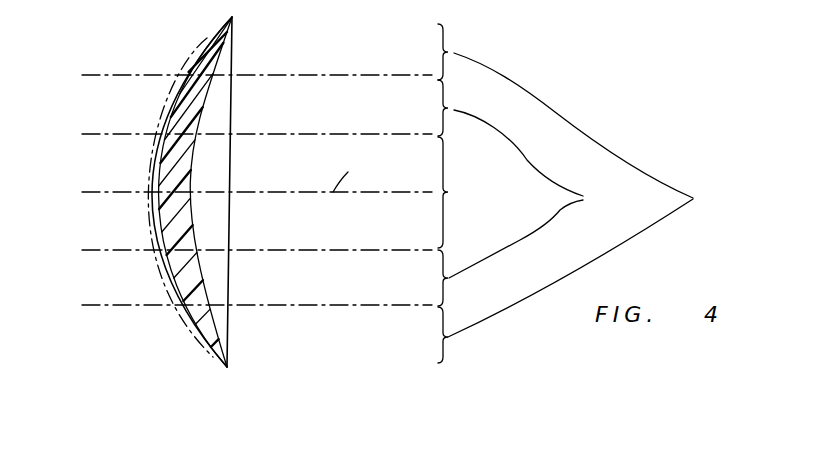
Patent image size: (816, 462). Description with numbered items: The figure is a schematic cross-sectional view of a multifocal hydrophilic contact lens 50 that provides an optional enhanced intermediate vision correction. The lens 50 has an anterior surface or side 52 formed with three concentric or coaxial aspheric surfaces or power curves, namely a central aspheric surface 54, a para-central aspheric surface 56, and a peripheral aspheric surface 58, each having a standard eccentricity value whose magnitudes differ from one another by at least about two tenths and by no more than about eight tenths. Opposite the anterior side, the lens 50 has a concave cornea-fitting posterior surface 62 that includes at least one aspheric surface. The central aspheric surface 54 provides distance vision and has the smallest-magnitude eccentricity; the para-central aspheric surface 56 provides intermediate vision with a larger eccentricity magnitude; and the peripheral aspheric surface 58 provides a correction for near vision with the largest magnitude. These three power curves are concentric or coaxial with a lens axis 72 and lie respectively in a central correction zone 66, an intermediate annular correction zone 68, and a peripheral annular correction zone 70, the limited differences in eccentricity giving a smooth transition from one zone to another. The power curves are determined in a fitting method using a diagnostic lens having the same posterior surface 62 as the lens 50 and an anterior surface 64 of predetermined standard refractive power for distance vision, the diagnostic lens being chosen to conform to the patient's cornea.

The multifocal hydrophilic contact lens 50 is at (183, 229).
The anterior surface 52 is at (190, 317).
The central aspheric surface 54 is at (153, 230).
The para-central aspheric surface 56 is at (177, 113).
The peripheral aspheric surface 58 is at (207, 56).
The posterior surface 62 is at (204, 279).
The anterior surface of diagnostic lens 64 is at (154, 262).
The central correction zone 66 is at (462, 193).
The intermediate annular correction zone 68 is at (532, 194).
The peripheral annular correction zone 70 is at (587, 195).
The lens axis 72 is at (357, 168).